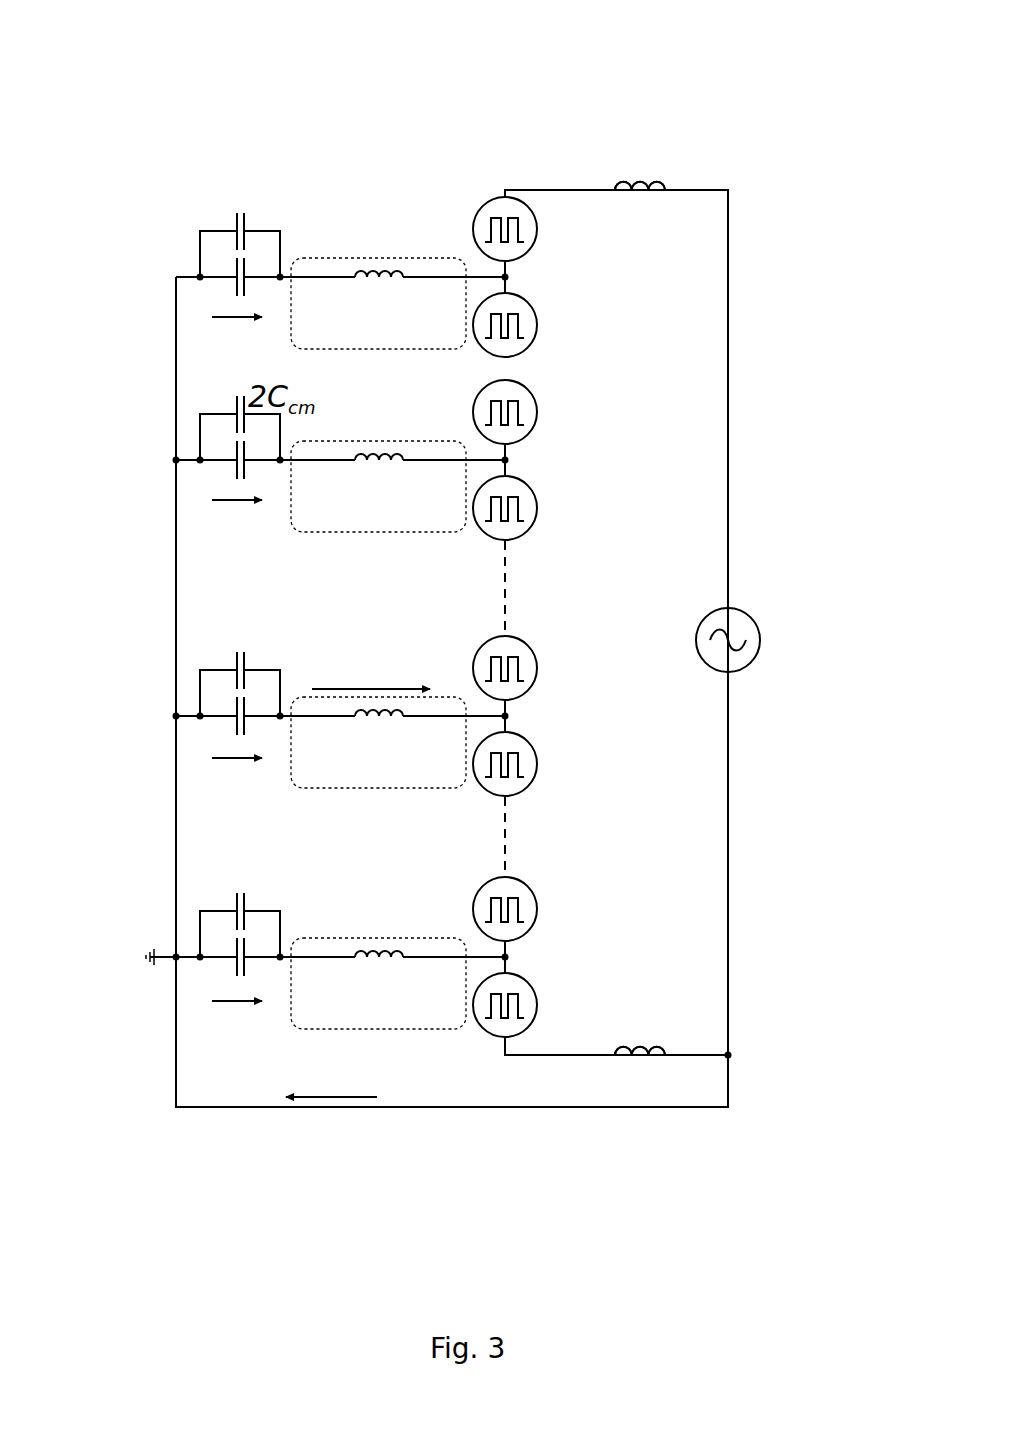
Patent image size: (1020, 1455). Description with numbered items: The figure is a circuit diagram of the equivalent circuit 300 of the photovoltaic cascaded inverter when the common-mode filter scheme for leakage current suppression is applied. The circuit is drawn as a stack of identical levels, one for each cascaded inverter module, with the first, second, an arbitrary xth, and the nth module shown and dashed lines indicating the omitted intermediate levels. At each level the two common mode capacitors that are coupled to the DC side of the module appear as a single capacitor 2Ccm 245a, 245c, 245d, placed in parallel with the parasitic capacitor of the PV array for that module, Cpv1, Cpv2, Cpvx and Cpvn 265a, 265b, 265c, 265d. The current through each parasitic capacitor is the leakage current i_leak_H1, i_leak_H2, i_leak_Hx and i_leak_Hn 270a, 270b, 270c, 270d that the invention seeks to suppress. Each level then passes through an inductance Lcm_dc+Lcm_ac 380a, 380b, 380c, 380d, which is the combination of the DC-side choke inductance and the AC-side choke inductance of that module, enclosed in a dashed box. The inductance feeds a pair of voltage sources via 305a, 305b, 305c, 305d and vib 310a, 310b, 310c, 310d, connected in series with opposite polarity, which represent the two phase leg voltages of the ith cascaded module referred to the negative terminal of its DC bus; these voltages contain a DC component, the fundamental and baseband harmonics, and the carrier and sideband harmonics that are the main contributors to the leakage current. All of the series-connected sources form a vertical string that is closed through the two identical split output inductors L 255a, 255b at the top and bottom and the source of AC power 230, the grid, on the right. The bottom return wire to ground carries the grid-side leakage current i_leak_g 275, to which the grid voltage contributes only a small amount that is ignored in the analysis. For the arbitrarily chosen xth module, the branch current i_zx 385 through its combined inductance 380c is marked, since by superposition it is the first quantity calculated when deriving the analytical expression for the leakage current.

The equivalent circuit 300 is at (457, 77).
The source of AC power 230 is at (760, 620).
The common mode capacitor 245a is at (253, 192).
The common mode capacitor 245c is at (275, 628).
The common mode capacitor 245d is at (316, 882).
The split inductor 255a is at (657, 170).
The split inductor 255b is at (677, 1040).
The parasitic capacitor 265a is at (198, 306).
The parasitic capacitor 265b is at (198, 492).
The parasitic capacitor 265c is at (198, 745).
The parasitic capacitor 265d is at (196, 988).
The leakage current 270a is at (232, 356).
The leakage current 270b is at (232, 542).
The leakage current 270c is at (235, 798).
The leakage current 270d is at (230, 1038).
The ground leakage current 275 is at (320, 1108).
The voltage source 305a is at (573, 257).
The voltage source 305b is at (573, 436).
The voltage source 305c is at (573, 688).
The voltage source 305d is at (573, 926).
The voltage source 310a is at (573, 352).
The voltage source 310b is at (573, 532).
The voltage source 310c is at (568, 790).
The voltage source 310d is at (560, 1020).
The inductance 380a is at (414, 257).
The inductance 380b is at (420, 440).
The inductance 380c is at (452, 698).
The inductance 380d is at (428, 925).
The branch current 385 is at (380, 660).